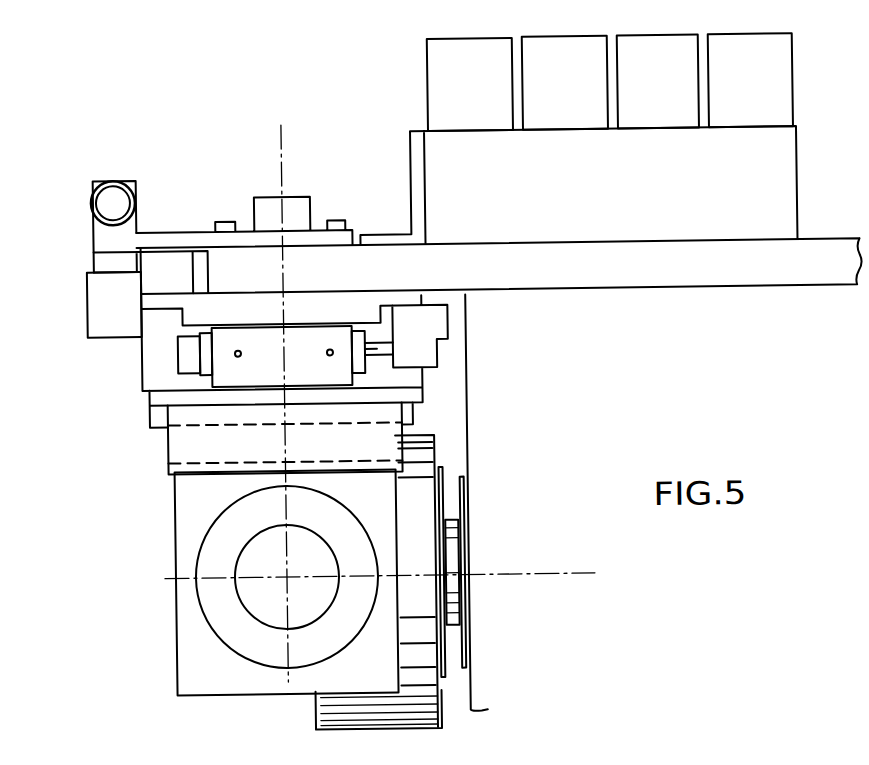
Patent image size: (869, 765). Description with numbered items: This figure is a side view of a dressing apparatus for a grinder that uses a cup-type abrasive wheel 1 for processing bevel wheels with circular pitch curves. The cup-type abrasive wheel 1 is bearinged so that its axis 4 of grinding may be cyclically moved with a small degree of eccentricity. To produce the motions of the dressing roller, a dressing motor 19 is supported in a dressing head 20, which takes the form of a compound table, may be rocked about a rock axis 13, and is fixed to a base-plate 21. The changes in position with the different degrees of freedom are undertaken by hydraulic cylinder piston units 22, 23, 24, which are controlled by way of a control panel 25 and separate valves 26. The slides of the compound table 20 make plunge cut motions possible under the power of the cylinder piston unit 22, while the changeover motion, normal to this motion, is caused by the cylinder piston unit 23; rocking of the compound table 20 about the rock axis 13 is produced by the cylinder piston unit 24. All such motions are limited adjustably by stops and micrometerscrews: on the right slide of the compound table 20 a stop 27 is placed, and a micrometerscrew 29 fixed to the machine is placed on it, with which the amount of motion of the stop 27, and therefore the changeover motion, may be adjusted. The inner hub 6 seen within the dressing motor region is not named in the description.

The cup-type abrasive wheel 1 is at (421, 514).
The axis of grinding 4 is at (546, 576).
The hub 6 is at (283, 577).
The rock axis 13 is at (287, 148).
The dressing motor 19 is at (258, 562).
The dressing head 20 is at (120, 381).
The base-plate 21 is at (604, 282).
The cylinder piston unit 22 is at (341, 376).
The cylinder piston unit 23 is at (106, 317).
The cylinder piston unit 24 is at (188, 255).
The control panel 25 is at (776, 194).
The separate valves 26 is at (792, 80).
The stop 27 is at (107, 259).
The micrometerscrew 29 is at (124, 188).